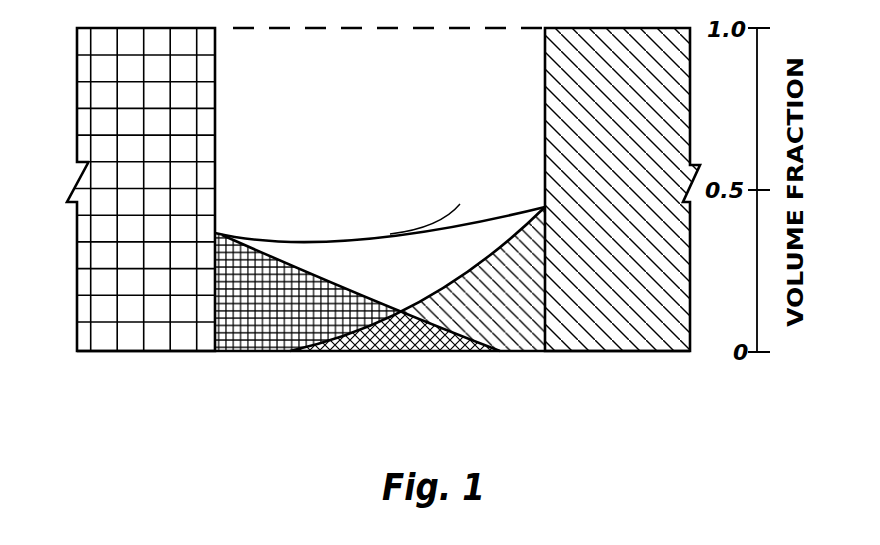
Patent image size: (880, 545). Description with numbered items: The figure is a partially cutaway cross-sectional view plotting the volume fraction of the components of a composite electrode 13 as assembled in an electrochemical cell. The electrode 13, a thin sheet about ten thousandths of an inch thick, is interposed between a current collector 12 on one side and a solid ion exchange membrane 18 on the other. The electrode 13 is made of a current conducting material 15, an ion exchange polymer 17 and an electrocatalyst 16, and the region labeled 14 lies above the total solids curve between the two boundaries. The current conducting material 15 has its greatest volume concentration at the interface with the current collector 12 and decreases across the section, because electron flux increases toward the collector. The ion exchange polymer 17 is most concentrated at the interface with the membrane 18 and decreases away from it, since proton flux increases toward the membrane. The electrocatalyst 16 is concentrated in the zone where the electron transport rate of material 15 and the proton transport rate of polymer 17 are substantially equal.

The current collector 12 is at (160, 249).
The solid composite electrode 13 is at (373, 355).
The void volume region 14 is at (403, 134).
The current conducting material 15 is at (250, 320).
The electrocatalyst 16 is at (430, 333).
The ion exchange polymer 17 is at (523, 300).
The solid ion exchange membrane 18 is at (630, 262).